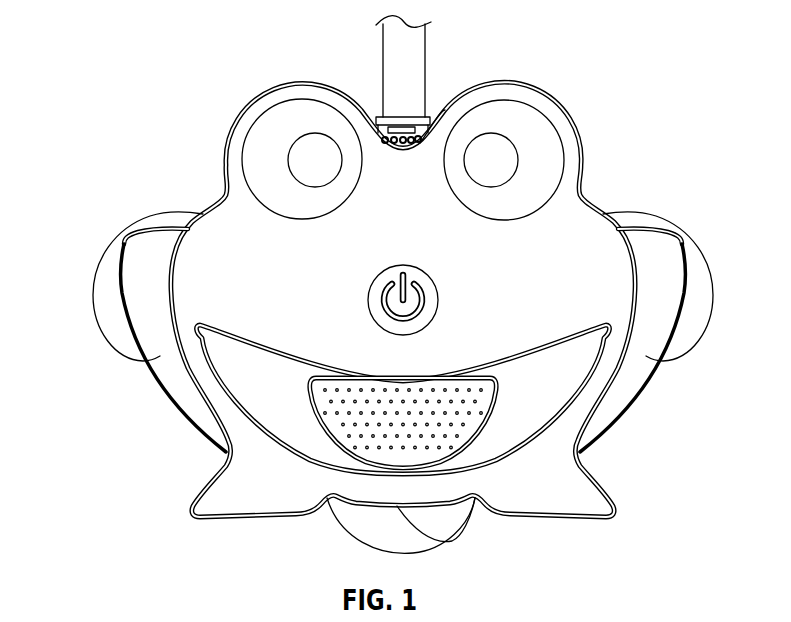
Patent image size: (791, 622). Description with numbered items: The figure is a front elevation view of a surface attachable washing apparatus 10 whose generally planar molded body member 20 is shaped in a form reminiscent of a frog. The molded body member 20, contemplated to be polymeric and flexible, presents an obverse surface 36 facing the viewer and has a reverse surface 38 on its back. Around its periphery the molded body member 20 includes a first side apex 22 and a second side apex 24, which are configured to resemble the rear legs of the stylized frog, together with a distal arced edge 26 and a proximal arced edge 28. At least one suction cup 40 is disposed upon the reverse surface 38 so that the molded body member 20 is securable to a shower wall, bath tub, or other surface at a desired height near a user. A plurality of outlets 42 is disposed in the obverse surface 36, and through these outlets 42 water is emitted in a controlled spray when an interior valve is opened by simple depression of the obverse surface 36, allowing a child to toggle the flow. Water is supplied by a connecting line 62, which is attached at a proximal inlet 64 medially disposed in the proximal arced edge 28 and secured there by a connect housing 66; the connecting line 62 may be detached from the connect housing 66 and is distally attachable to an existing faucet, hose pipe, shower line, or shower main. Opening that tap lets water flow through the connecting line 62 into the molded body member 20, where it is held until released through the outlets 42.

The surface attachable washing apparatus 10 is at (93, 60).
The molded body member 20 is at (198, 318).
The first side apex 22 is at (125, 303).
The second side apex 24 is at (690, 262).
The distal arced edge 26 is at (440, 541).
The proximal arced edge 28 is at (432, 115).
The obverse surface 36 is at (565, 272).
The reverse surface 38 is at (268, 86).
The suction cup 40 is at (142, 228).
The outlets 42 is at (363, 438).
The connecting line 62 is at (415, 50).
The proximal inlet 64 is at (364, 92).
The connect housing 66 is at (388, 147).